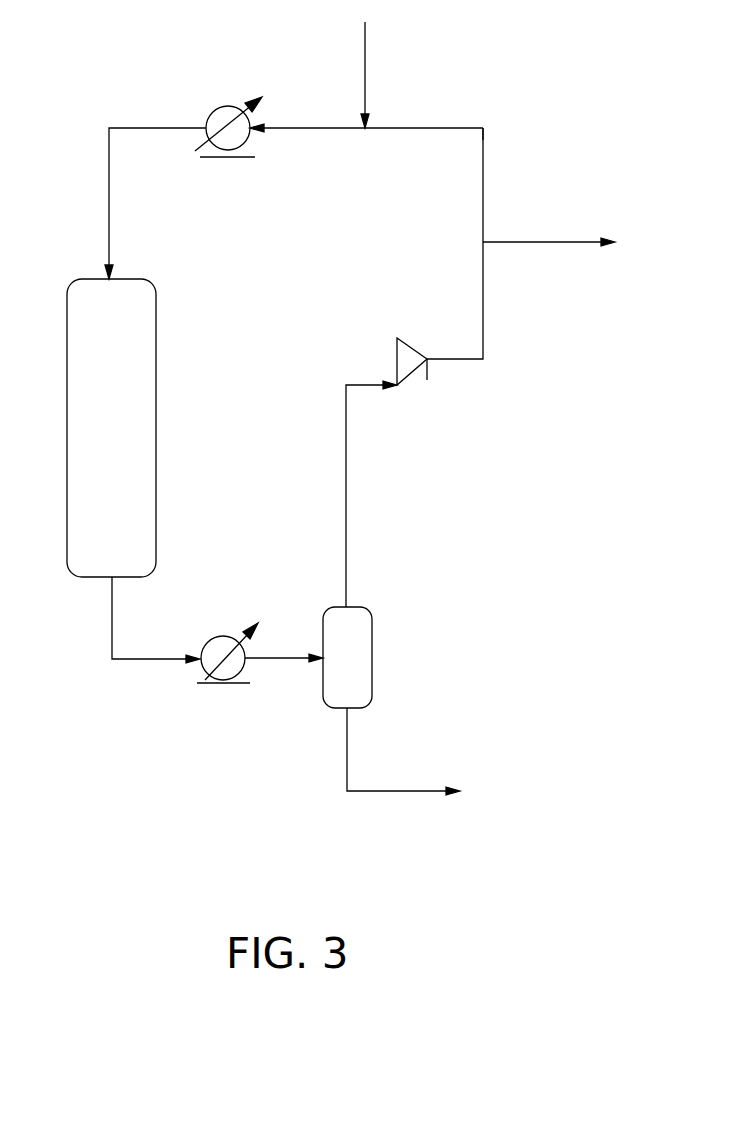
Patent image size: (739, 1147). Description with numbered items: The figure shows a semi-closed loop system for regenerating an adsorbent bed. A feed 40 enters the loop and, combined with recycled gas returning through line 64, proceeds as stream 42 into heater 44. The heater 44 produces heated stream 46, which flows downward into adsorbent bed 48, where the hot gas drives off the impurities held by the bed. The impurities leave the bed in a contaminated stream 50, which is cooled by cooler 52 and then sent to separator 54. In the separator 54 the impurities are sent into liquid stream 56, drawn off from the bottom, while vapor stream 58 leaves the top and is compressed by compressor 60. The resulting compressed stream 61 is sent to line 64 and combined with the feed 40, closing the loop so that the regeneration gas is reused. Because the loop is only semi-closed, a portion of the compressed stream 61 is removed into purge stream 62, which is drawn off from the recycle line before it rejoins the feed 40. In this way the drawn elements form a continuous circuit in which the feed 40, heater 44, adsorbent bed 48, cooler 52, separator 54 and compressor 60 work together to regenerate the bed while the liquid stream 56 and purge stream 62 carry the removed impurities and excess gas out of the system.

The feed 40 is at (366, 52).
The stream 42 is at (316, 128).
The heater 44 is at (228, 150).
The heated stream 46 is at (109, 203).
The adsorbent bed 48 is at (125, 447).
The contaminated stream 50 is at (112, 616).
The cooler 52 is at (224, 636).
The separator 54 is at (362, 670).
The liquid stream 56 is at (348, 743).
The vapor stream 58 is at (346, 495).
The compressor 60 is at (414, 342).
The compressed stream 61 is at (483, 323).
The purge stream 62 is at (550, 242).
The line 64 is at (467, 124).